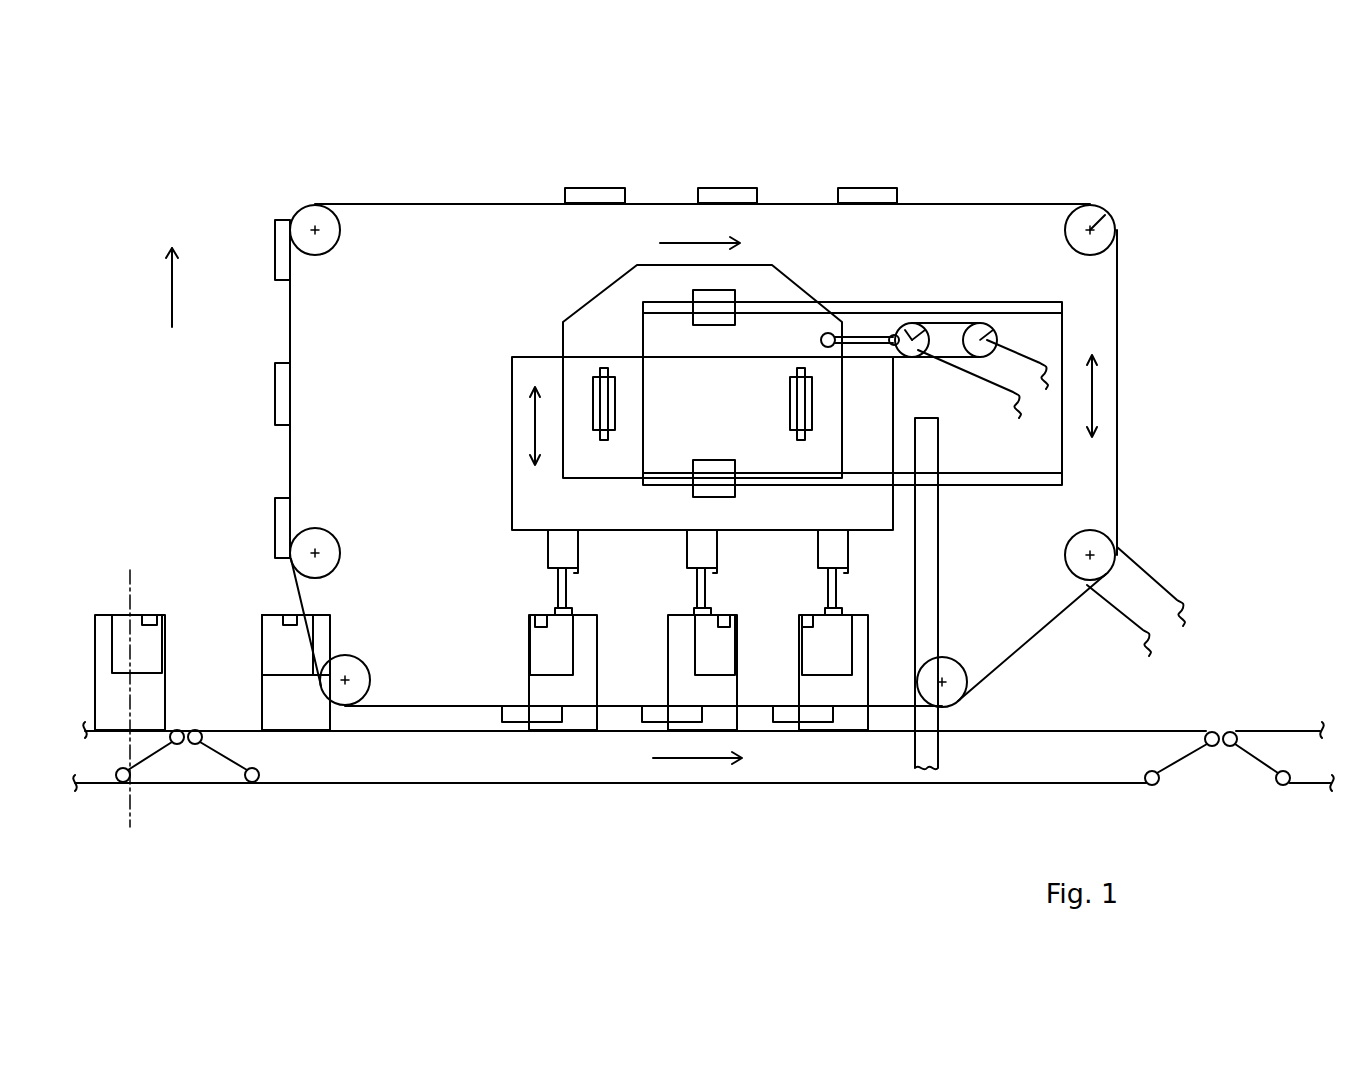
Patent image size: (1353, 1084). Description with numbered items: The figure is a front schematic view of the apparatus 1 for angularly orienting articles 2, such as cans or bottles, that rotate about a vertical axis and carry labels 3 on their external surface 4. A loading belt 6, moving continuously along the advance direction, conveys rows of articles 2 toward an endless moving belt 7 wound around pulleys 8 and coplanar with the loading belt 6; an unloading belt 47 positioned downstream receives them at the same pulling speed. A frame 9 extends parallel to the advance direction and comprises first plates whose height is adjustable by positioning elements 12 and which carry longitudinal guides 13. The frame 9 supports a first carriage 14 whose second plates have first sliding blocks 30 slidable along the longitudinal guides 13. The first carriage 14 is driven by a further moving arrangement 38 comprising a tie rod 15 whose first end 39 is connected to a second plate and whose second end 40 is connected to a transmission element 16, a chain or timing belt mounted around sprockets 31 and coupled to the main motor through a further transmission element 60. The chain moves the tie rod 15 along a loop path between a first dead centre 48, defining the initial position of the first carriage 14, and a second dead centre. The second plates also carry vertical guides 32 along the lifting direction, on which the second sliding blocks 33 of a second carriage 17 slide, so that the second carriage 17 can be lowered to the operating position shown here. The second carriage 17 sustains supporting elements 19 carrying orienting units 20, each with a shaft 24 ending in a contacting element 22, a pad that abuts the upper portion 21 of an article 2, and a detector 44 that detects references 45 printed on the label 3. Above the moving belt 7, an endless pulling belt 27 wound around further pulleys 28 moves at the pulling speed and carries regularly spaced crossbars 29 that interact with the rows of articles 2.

The apparatus 1 is at (983, 150).
The articles 2 is at (300, 707).
The labels 3 is at (268, 648).
The external surface 4 is at (262, 690).
The loading belt 6 is at (104, 807).
The moving belt 7 is at (526, 818).
The pulleys 8 is at (252, 782).
The frame 9 is at (1017, 453).
The positioning elements 12 is at (925, 747).
The longitudinal guides 13 is at (1028, 303).
The first carriage 14 is at (613, 305).
The tie rod 15 is at (893, 335).
The transmission element 16 is at (945, 320).
The second carriage 17 is at (527, 497).
The supporting elements 19 is at (557, 542).
The orienting units 20 is at (532, 597).
The upper portion 21 is at (241, 604).
The contacting element 22 is at (533, 610).
The shaft 24 is at (703, 583).
The pulling belt 27 is at (400, 203).
The further pulleys 28 is at (298, 205).
The crossbars 29 is at (278, 232).
The first sliding blocks 30 is at (720, 296).
The sprockets 31 is at (1000, 337).
The vertical guides 32 is at (592, 380).
The second sliding blocks 33 is at (600, 410).
The further moving arrangement 38 is at (947, 377).
The first end 39 is at (803, 348).
The second end 40 is at (925, 330).
The detector 44 is at (712, 572).
The references 45 is at (290, 618).
The unloading belt 47 is at (1305, 805).
The first dead centre 48 is at (905, 338).
The further transmission element 60 is at (1030, 358).